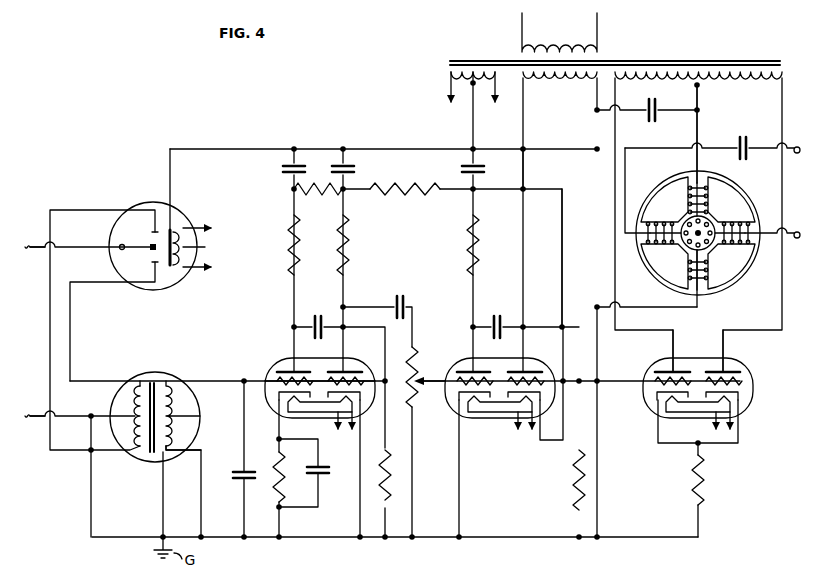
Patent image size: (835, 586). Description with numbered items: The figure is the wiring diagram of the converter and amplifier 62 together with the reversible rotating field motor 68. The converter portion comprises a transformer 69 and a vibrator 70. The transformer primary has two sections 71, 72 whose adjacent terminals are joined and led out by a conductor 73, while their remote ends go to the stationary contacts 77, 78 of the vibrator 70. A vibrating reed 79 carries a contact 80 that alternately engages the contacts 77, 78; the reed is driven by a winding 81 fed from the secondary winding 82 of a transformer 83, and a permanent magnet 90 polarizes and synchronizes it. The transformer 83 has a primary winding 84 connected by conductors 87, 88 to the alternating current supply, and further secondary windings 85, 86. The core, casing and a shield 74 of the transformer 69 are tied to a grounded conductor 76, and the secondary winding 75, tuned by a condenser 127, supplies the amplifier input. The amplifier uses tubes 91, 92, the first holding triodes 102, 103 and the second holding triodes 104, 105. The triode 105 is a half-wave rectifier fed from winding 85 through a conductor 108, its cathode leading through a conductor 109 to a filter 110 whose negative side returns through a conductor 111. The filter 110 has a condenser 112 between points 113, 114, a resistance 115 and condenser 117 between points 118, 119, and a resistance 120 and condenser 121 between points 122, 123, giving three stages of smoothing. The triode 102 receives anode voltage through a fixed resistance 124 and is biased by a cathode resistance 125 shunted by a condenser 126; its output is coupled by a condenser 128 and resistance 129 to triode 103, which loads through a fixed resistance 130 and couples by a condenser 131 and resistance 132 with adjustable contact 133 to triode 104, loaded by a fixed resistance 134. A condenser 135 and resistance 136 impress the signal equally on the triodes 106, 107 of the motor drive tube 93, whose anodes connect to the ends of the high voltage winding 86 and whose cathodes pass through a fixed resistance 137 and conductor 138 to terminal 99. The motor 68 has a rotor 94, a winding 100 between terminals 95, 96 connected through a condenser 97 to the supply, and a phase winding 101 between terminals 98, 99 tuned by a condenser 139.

The converter and amplifier 62 is at (172, 140).
The reversible rotating field motor 68 is at (749, 294).
The transformer 69 is at (160, 372).
The vibrator 70 is at (155, 201).
The primary winding section 71 is at (130, 389).
The primary winding section 72 is at (133, 452).
The conductor 73 is at (36, 418).
The shield 74 is at (169, 456).
The secondary winding 75 is at (201, 416).
The grounded conductor 76 is at (314, 538).
The stationary contact 77 is at (157, 264).
The stationary contact 78 is at (154, 232).
The vibrating reed 79 is at (87, 241).
The contact 80 is at (150, 249).
The winding 81 is at (199, 247).
The secondary winding 82 is at (469, 110).
The transformer 83 is at (482, 62).
The primary winding 84 is at (562, 44).
The secondary winding 85 is at (560, 82).
The high voltage secondary winding 86 is at (745, 82).
The conductor 87 is at (521, 27).
The conductor 88 is at (598, 27).
The permanent magnet 90 is at (176, 231).
The electronic amplifying tube 91 is at (290, 357).
The electronic amplifying tube 92 is at (472, 358).
The electronic tube 93 is at (701, 359).
The rotor 94 is at (721, 199).
The motor terminal 95 is at (801, 146).
The motor terminal 96 is at (800, 232).
The condenser 97 is at (750, 141).
The motor terminal 98 is at (699, 128).
The motor terminal 99 is at (650, 307).
The winding 100 is at (664, 210).
The winding 101 is at (711, 269).
The triode 102 is at (272, 364).
The triode 103 is at (348, 359).
The triode 104 is at (464, 359).
The triode 105 is at (526, 360).
The triode 106 is at (652, 364).
The triode 107 is at (743, 364).
The conductor 108 is at (524, 126).
The conductor 109 is at (562, 266).
The filter 110 is at (400, 142).
The conductor 111 is at (547, 151).
The condenser 112 is at (461, 170).
The filter point 113 is at (474, 149).
The filter point 114 is at (475, 191).
The resistance 115 is at (410, 193).
The condenser 117 is at (355, 170).
The filter point 118 is at (342, 148).
The filter point 119 is at (345, 191).
The resistance 120 is at (327, 194).
The condenser 121 is at (282, 170).
The filter point 122 is at (293, 148).
The filter point 123 is at (292, 189).
The fixed resistance 124 is at (287, 250).
The cathode biasing resistance 125 is at (286, 460).
The condenser 126 is at (330, 464).
The condenser 127 is at (236, 474).
The condenser 128 is at (320, 316).
The resistance 129 is at (396, 468).
The fixed resistance 130 is at (350, 250).
The condenser 131 is at (396, 296).
The resistance 132 is at (418, 344).
The adjustable contact 133 is at (426, 390).
The fixed resistance 134 is at (466, 252).
The condenser 135 is at (498, 316).
The resistance 136 is at (573, 480).
The fixed resistance 137 is at (705, 482).
The conductor 138 is at (603, 480).
The condenser 139 is at (651, 121).